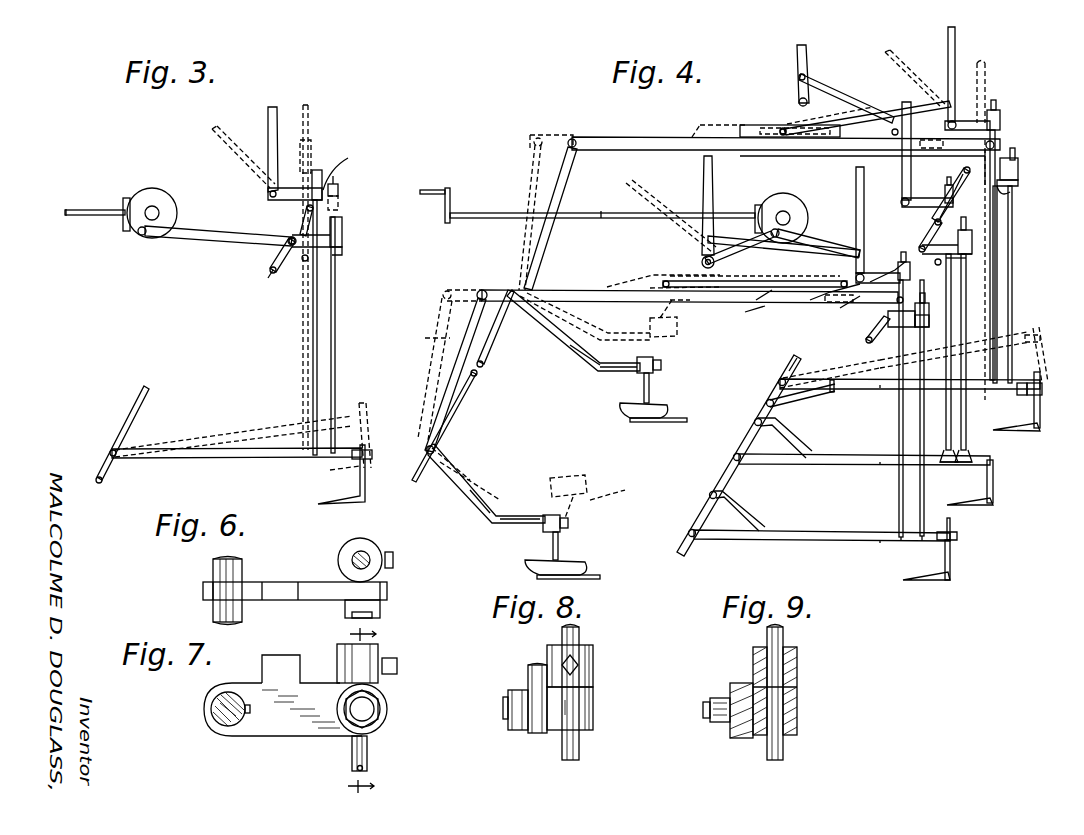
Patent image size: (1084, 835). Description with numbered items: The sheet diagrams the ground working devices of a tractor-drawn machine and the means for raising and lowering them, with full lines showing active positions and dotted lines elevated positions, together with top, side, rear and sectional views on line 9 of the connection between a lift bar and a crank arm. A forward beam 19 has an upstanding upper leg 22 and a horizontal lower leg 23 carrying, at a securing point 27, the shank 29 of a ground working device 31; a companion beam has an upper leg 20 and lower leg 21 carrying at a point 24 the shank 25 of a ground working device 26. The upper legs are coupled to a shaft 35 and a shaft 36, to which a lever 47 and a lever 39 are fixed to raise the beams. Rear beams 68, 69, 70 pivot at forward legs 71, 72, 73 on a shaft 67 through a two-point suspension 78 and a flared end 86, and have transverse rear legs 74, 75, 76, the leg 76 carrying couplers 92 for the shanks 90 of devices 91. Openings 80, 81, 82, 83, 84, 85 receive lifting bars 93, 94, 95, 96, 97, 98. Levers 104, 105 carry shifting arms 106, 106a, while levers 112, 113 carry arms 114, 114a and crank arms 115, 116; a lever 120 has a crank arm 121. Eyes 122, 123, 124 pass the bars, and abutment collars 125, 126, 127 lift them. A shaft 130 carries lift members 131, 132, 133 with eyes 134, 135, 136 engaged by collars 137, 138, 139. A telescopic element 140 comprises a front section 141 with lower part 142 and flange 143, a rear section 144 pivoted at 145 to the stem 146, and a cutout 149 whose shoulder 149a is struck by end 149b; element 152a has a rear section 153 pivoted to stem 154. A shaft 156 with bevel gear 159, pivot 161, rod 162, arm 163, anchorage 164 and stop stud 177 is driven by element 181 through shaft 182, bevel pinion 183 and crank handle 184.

In FIG. 7, the section line 9— 9 is at (353, 712).
In FIG. 4, the forward beam 19 is at (578, 350).
In FIG. 4, the upstanding upper leg 20 is at (490, 520).
In FIG. 4, the horizontally disposed lower leg 21 is at (528, 524).
In FIG. 4, the upstanding upper leg 22 is at (590, 365).
In FIG. 4, the horizontally disposed lower leg 23 is at (622, 371).
In FIG. 4, the adjustable securing point 24 is at (565, 515).
In FIG. 4, the shank 25 is at (560, 551).
In FIG. 4, the ground working device 26 is at (585, 568).
In FIG. 4, the adjustable securing point 27 is at (656, 360).
In FIG. 4, the shank 29 is at (650, 396).
In FIG. 4, the ground working device 31 is at (668, 410).
In FIG. 4, the shaft 35 is at (498, 345).
In FIG. 4, the shaft 36 is at (466, 400).
In FIG. 4, the lever 39 is at (435, 343).
In FIG. 4, the lever 47 is at (550, 180).
In FIG. 3, the shaft 67 is at (140, 403).
In FIG. 4, the shaft 67 is at (728, 485).
In FIG. 4, the outer rear beam 68 is at (869, 387).
In FIG. 3, the intermediate rear beam 69 is at (237, 462).
In FIG. 4, the intermediate rear beam 69 is at (852, 464).
In FIG. 4, the outer rear beam 70 is at (844, 540).
In FIG. 4, the forward leg 71 is at (888, 391).
In FIG. 4, the forward leg 72 is at (888, 466).
In FIG. 4, the forward leg 73 is at (890, 542).
In FIG. 4, the rear leg 74 is at (1040, 405).
In FIG. 4, the rear leg 75 is at (995, 478).
In FIG. 4, the rear leg 76 is at (957, 540).
In FIG. 4, the two-point suspension 78 is at (766, 397).
In FIG. 4, the opening 80 is at (900, 535).
In FIG. 4, the opening 81 is at (925, 536).
In FIG. 4, the opening 82 is at (1020, 388).
In FIG. 4, the opening 83 is at (1035, 395).
In FIG. 4, the opening 84 is at (946, 463).
In FIG. 4, the opening 85 is at (966, 463).
In FIG. 4, the open flared forward end 86 is at (758, 422).
In FIG. 4, the shank 90 is at (951, 564).
In FIG. 4, the ground working device 91 is at (935, 582).
In FIG. 4, the coupler 92 is at (951, 528).
In FIG. 4, the lifting bar 93 is at (899, 497).
In FIG. 4, the lifting bar 94 is at (920, 511).
In FIG. 6, the lifting bar 94 is at (367, 555).
In FIG. 7, the lifting bar 94 is at (367, 757).
In FIG. 8, the lifting bar 94 is at (570, 760).
In FIG. 9, the lifting bar 94 is at (773, 760).
In FIG. 4, the lifting bar 95 is at (1000, 320).
In FIG. 4, the lifting bar 96 is at (1012, 328).
In FIG. 3, the lifting bar 97 is at (317, 306).
In FIG. 4, the lifting bar 97 is at (946, 420).
In FIG. 3, the lifting bar 98 is at (335, 330).
In FIG. 4, the lifting bar 98 is at (961, 436).
In FIG. 4, the lever 104 is at (808, 62).
In FIG. 4, the lever 105 is at (704, 196).
In FIG. 4, the shifting arm 106 is at (865, 100).
In FIG. 4, the shifting arm 106a is at (700, 262).
In FIG. 4, the lever 112 is at (949, 68).
In FIG. 4, the lever 113 is at (857, 204).
In FIG. 4, the shifting arm 114 is at (888, 112).
In FIG. 4, the shifting arm 114a is at (806, 250).
In FIG. 4, the crank arm 115 is at (975, 121).
In FIG. 4, the crank arm 116 is at (885, 280).
In FIG. 3, the lever 120 is at (268, 137).
In FIG. 4, the lever 120 is at (903, 172).
In FIG. 3, the crank arm 121 is at (292, 201).
In FIG. 4, the crank arm 121 is at (935, 200).
In FIG. 4, the eye 122 is at (996, 132).
In FIG. 4, the eye 123 is at (910, 272).
In FIG. 3, the eye 124 is at (338, 190).
In FIG. 4, the eye 124 is at (952, 200).
In FIG. 4, the abutment collar 125 is at (999, 105).
In FIG. 4, the abutment collar 126 is at (880, 306).
In FIG. 3, the abutment collar 127 is at (348, 158).
In FIG. 4, the abutment collar 127 is at (934, 220).
In FIG. 3, the shaft 130 is at (270, 270).
In FIG. 4, the shaft 130 is at (866, 335).
In FIG. 6, the shaft 130 is at (212, 568).
In FIG. 7, the shaft 130 is at (211, 709).
In FIG. 4, the lift member 131 is at (1018, 184).
In FIG. 4, the lift member 132 is at (890, 328).
In FIG. 6, the lift member 132 is at (330, 602).
In FIG. 7, the lift member 132 is at (312, 737).
In FIG. 8, the lift member 132 is at (538, 733).
In FIG. 9, the lift member 132 is at (742, 738).
In FIG. 3, the lift member 133 is at (340, 253).
In FIG. 4, the lift member 133 is at (972, 250).
In FIG. 4, the vertical eye 134 is at (1018, 167).
In FIG. 3, the vertical eye 135 is at (342, 240).
In FIG. 4, the vertical eye 135 is at (929, 318).
In FIG. 6, the vertical eye 135 is at (380, 588).
In FIG. 7, the vertical eye 135 is at (385, 685).
In FIG. 8, the vertical eye 135 is at (593, 700).
In FIG. 9, the vertical eye 135 is at (797, 710).
In FIG. 4, the vertical eye 136 is at (972, 240).
In FIG. 4, the collar 137 is at (1015, 154).
In FIG. 3, the collar 138 is at (342, 228).
In FIG. 4, the collar 138 is at (929, 305).
In FIG. 6, the collar 138 is at (372, 572).
In FIG. 7, the collar 138 is at (380, 650).
In FIG. 8, the collar 138 is at (593, 668).
In FIG. 9, the collar 138 is at (797, 667).
In FIG. 4, the collar 139 is at (966, 223).
In FIG. 4, the telescopic element 140 is at (740, 305).
In FIG. 4, the front section 141 is at (586, 278).
In FIG. 4, the lower part 142 is at (597, 305).
In FIG. 4, the vertical flange 143 is at (640, 275).
In FIG. 4, the rear section 144 is at (835, 305).
In FIG. 4, the pivotal connection 145 is at (850, 315).
In FIG. 4, the stem 146 is at (968, 270).
In FIG. 4, the rear cutout 149 is at (848, 280).
In FIG. 4, the shoulder 149a is at (770, 305).
In FIG. 4, the end of arm 106a 149b is at (800, 322).
In FIG. 4, the telescopic element 152a is at (660, 126).
In FIG. 4, the rear section 153 is at (995, 142).
In FIG. 4, the stem 154 is at (1003, 152).
In FIG. 3, the rotatable shaft 156 is at (159, 213).
In FIG. 4, the rotatable shaft 156 is at (789, 213).
In FIG. 3, the bevel gear 159 is at (159, 195).
In FIG. 4, the bevel gear 159 is at (795, 184).
In FIG. 3, the pivot 161 is at (138, 235).
In FIG. 4, the pivot 161 is at (770, 236).
In FIG. 3, the operating rod 162 is at (235, 226).
In FIG. 4, the operating rod 162 is at (838, 226).
In FIG. 3, the depending arm 163 is at (275, 256).
In FIG. 4, the depending arm 163 is at (975, 203).
In FIG. 3, the anchorage 164 is at (300, 262).
In FIG. 4, the anchorage 164 is at (942, 262).
In FIG. 4, the stud 177 is at (478, 510).
In FIG. 3, the driving element 181 is at (71, 207).
In FIG. 4, the driving element 181 is at (612, 204).
In FIG. 3, the shaft 182 is at (106, 215).
In FIG. 4, the shaft 182 is at (640, 220).
In FIG. 3, the bevel pinion 183 is at (125, 198).
In FIG. 4, the bevel pinion 183 is at (753, 210).
In FIG. 4, the crank handle 184 is at (451, 212).